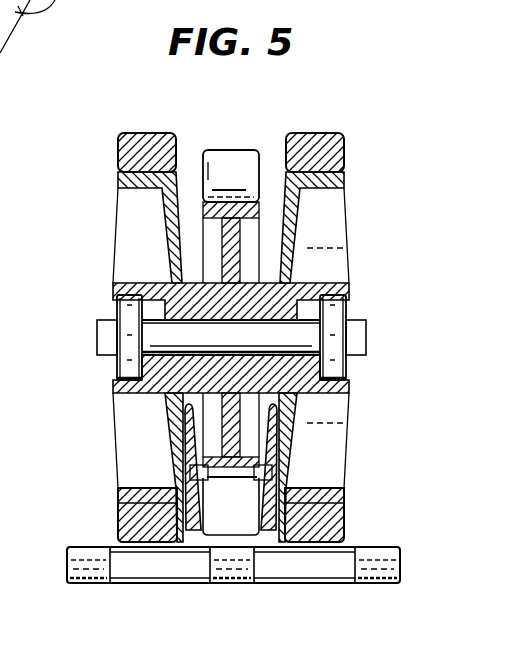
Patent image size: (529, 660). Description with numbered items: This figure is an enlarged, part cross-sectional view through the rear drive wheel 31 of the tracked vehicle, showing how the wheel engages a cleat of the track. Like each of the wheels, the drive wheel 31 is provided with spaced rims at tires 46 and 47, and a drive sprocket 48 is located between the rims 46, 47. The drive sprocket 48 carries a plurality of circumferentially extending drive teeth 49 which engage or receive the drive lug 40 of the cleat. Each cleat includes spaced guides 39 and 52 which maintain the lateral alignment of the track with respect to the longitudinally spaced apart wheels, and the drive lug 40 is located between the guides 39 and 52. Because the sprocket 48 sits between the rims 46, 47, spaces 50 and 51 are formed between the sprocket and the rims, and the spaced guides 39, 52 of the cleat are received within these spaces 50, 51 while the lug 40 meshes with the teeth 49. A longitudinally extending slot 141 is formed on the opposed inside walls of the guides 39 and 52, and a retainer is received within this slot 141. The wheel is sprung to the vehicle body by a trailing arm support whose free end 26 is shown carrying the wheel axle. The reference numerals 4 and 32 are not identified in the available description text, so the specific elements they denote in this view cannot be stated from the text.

The frame 4 is at (50, 566).
The free end 26 is at (100, 332).
The rear drive wheel 31 is at (110, 206).
The mounting bracket 32 is at (67, 547).
The guide 39 is at (302, 444).
The drive lug 40 is at (143, 523).
The tire 46 is at (318, 137).
The tire 47 is at (123, 152).
The drive sprocket 48 is at (213, 153).
The drive teeth 49 is at (231, 160).
The space 50 is at (189, 150).
The space 51 is at (274, 147).
The guide 52 is at (185, 432).
The slot 141 is at (200, 467).